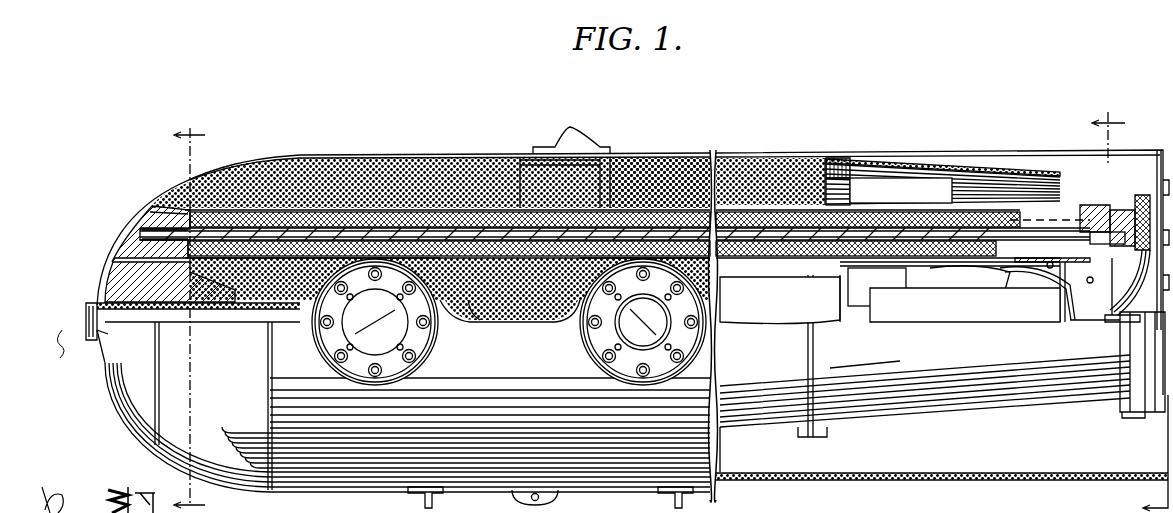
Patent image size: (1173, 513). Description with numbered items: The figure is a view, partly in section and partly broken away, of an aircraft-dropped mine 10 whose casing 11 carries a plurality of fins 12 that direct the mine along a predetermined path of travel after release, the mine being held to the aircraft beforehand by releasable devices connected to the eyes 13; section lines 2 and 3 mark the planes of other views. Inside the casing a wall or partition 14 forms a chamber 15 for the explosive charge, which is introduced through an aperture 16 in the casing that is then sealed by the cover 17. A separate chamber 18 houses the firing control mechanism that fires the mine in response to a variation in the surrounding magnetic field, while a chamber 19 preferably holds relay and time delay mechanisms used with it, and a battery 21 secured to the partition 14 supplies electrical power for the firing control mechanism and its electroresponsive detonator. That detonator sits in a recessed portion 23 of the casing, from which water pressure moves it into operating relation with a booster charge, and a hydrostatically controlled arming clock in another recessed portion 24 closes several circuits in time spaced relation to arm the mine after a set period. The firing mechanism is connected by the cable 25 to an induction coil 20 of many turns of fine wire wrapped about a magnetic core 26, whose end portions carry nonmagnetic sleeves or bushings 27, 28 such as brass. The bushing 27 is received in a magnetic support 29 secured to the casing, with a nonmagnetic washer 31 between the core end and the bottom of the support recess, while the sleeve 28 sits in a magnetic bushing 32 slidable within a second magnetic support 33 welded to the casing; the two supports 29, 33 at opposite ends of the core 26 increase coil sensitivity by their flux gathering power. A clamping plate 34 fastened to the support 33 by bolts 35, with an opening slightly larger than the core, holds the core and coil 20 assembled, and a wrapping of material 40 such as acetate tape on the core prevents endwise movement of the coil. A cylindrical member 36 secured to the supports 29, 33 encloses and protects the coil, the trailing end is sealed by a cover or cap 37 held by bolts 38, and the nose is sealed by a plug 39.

The section line 2- 2 is at (189, 300).
The section line 3- 3 is at (1130, 299).
The mine 10 is at (400, 155).
The casing 11 is at (688, 153).
The fins 12 is at (963, 158).
The eyes 13 is at (518, 498).
The wall or partition 14 is at (838, 160).
The chamber 15 is at (760, 160).
The aperture 16 is at (515, 318).
The cover 17 is at (472, 322).
The chamber 18 is at (784, 300).
The chamber 19 is at (1018, 298).
The induction coil 20 is at (488, 212).
The battery 21 is at (893, 190).
The recessed portion 23 is at (325, 354).
The recessed portion 24 is at (582, 353).
The cable 25 is at (1080, 284).
The core 26 is at (150, 236).
The sleeve or bushing 27 is at (157, 214).
The sleeve or bushing 28 is at (1085, 210).
The magnetic support 29 is at (130, 268).
The nonmagnetic washer 31 is at (140, 244).
The magnetic bushing 32 is at (1097, 205).
The magnetic support 33 is at (1122, 278).
The clamping plate 34 is at (1118, 210).
The bolts 35 is at (1143, 200).
The cylindrical member 36 is at (862, 262).
The cover or cap 37 is at (1110, 301).
The bolts 38 is at (1157, 251).
The plug 39 is at (86, 320).
The wrapping or covering of material 40 is at (245, 234).